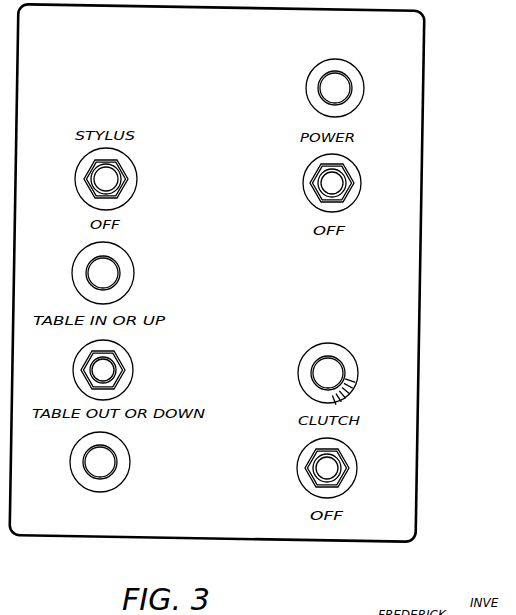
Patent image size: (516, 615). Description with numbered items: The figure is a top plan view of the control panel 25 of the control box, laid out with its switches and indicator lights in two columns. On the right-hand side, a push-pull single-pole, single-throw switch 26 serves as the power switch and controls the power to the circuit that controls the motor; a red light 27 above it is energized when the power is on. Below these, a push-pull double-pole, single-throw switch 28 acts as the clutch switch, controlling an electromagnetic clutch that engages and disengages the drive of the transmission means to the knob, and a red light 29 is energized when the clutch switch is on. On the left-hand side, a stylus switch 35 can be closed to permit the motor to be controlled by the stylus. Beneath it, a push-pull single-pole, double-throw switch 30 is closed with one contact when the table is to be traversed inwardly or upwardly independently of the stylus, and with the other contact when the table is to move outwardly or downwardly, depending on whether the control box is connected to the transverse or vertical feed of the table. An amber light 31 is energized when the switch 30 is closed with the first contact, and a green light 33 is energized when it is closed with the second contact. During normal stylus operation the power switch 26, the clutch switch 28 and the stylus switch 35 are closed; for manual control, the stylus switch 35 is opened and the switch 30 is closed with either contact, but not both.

The control panel 25 is at (421, 247).
The push-pull single-pole, single-throw switch 26 is at (337, 180).
The red light 27 is at (343, 86).
The push-pull double-pole, single-throw switch 28 is at (332, 465).
The red light 29 is at (335, 368).
The push-pull single-pole, double-throw switch 30 is at (108, 366).
The amber light 31 is at (110, 268).
The green light 33 is at (107, 460).
The stylus switch 35 is at (112, 176).